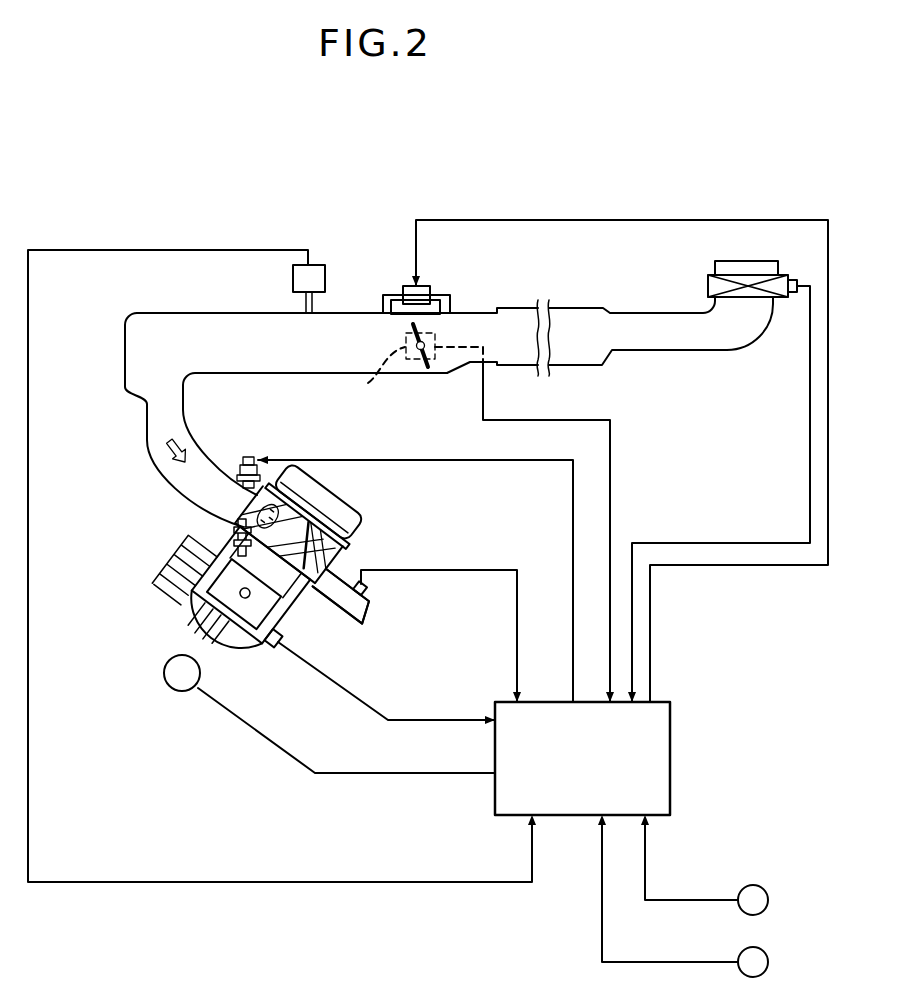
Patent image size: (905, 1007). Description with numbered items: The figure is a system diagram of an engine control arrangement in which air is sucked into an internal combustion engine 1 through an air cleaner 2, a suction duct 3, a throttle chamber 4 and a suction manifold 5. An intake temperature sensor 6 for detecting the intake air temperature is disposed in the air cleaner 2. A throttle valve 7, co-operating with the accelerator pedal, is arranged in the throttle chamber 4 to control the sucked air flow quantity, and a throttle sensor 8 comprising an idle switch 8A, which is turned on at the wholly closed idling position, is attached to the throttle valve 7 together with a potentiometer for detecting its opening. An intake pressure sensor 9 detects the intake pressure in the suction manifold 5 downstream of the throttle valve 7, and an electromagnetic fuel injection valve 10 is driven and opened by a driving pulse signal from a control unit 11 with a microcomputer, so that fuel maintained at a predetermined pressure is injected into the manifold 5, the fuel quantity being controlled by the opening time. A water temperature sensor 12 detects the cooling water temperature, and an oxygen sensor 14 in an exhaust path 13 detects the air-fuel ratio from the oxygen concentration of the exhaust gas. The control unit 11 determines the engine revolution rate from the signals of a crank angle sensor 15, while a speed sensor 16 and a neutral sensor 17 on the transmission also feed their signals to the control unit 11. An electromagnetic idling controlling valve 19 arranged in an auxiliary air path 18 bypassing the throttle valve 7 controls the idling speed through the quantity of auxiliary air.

The internal combustion engine 1 is at (358, 556).
The air cleaner 2 is at (708, 283).
The suction duct 3 is at (725, 351).
The throttle chamber 4 is at (447, 378).
The suction manifold 5 is at (157, 447).
The intake temperature sensor 6 is at (795, 280).
The throttle valve 7 is at (422, 366).
The throttle sensor 8 is at (366, 380).
The idle switch 8A is at (386, 365).
The intake pressure sensor 9 is at (326, 270).
The electromagnetic fuel injection valve 10 is at (245, 457).
The control unit 11 is at (670, 718).
The water temperature sensor 12 is at (272, 648).
The exhaust path 13 is at (345, 610).
The oxygen sensor 14 is at (369, 590).
The crank angle sensor 15 is at (170, 692).
The speed sensor 16 is at (766, 892).
The neutral sensor 17 is at (768, 960).
The auxiliary air path 18 is at (450, 300).
The electromagnetic idling controlling valve 19 is at (432, 290).